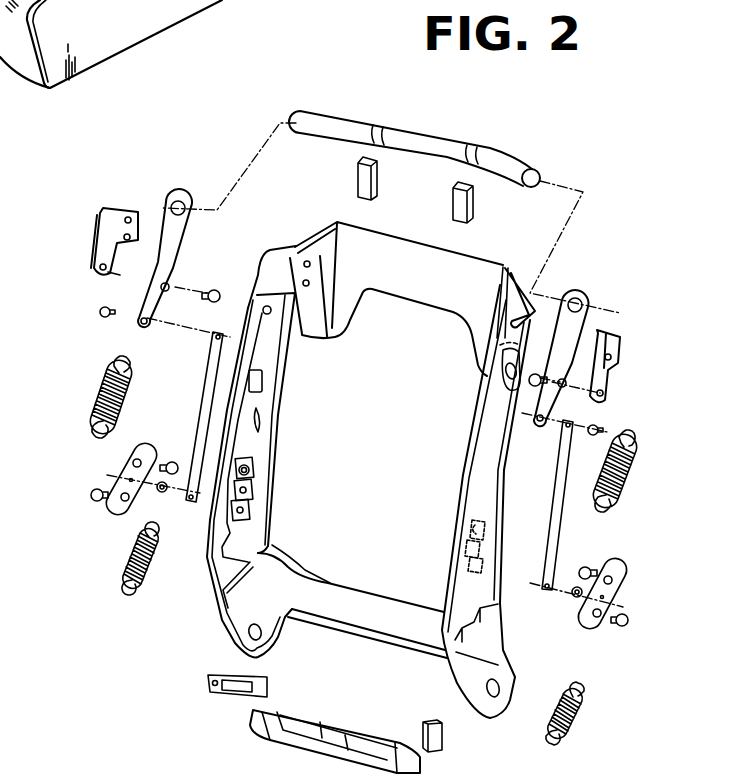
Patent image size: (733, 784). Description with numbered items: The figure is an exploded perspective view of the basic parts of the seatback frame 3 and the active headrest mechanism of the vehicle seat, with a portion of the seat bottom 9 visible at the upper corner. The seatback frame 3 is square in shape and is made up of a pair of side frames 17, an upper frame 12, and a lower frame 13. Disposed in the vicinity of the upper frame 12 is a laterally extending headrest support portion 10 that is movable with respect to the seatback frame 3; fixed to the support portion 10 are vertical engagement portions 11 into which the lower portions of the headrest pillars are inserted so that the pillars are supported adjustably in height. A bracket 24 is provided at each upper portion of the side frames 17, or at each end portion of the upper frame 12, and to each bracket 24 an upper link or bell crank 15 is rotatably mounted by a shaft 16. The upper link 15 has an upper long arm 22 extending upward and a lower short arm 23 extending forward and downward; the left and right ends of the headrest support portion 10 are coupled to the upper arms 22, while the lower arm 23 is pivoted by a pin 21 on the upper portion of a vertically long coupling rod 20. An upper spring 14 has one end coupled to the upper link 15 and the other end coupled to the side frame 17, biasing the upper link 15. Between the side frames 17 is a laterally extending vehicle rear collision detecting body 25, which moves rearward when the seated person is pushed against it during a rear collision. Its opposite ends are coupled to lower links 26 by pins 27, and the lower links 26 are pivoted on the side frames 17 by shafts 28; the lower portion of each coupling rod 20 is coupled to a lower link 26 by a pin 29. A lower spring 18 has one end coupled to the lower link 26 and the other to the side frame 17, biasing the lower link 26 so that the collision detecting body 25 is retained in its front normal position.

The seatback frame 3 is at (302, 241).
The seat bottom 9 is at (150, 3).
The headrest support portion 10 is at (410, 137).
The vertical engagement portion 11 is at (378, 173).
The upper frame 12 is at (412, 253).
The lower frame 13 is at (355, 618).
The upper spring 14 is at (102, 390).
The upper link 15 is at (180, 239).
The shaft 16 is at (220, 292).
The side frame 17 is at (260, 462).
The lower spring 18 is at (153, 563).
The coupling rod 20 is at (197, 390).
The pin 21 is at (103, 317).
The upper arm 22 is at (167, 225).
The lower arm 23 is at (140, 297).
The bracket 24 is at (115, 212).
The vehicle rear collision detecting body 25 is at (327, 717).
The lower link 26 is at (118, 460).
The pin 27 is at (92, 503).
The shaft 28 is at (173, 462).
The pin 29 is at (158, 490).